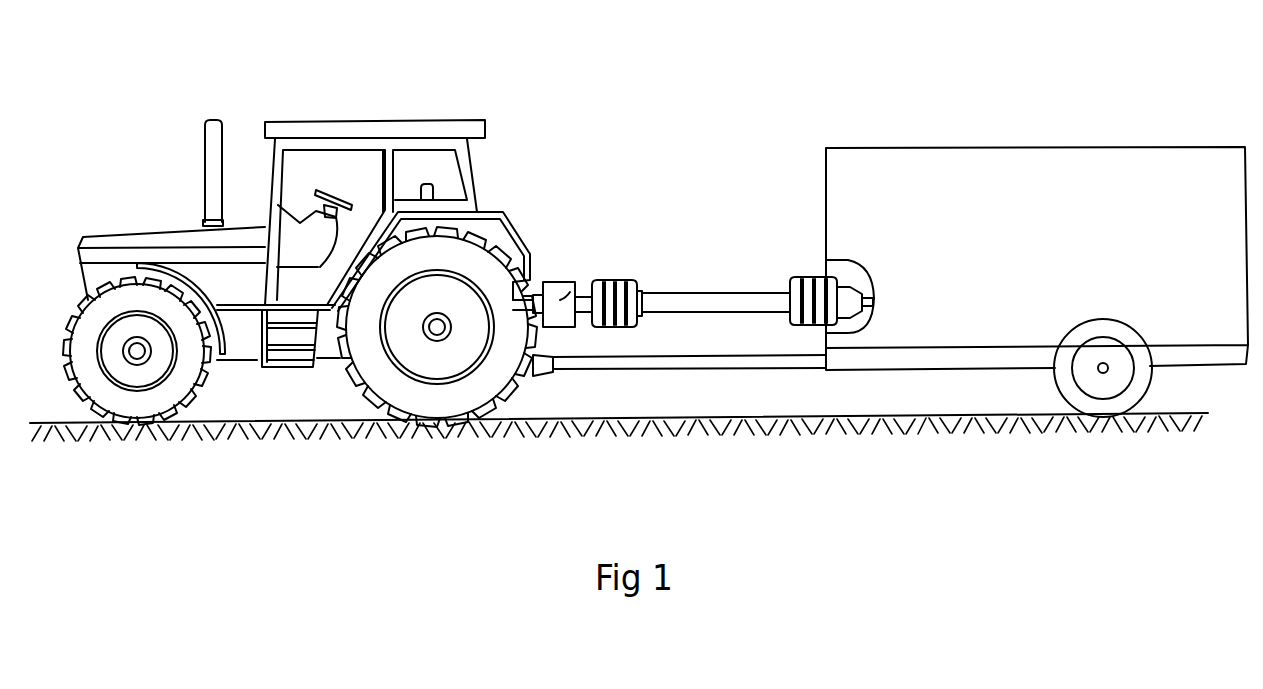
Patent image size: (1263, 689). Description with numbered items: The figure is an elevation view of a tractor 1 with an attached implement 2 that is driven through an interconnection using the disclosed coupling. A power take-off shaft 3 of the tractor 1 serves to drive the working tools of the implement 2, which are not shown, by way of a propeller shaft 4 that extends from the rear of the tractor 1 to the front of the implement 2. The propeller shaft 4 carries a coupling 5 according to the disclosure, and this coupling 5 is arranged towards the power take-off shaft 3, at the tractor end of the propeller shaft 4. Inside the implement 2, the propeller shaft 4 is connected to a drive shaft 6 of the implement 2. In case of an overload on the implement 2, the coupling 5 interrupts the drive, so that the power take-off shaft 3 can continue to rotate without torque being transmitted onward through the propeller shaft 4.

The tractor 1 is at (180, 260).
The implement 2 is at (1015, 207).
The power take-off shaft 3 is at (512, 306).
The propeller shaft 4 is at (697, 298).
The coupling 5 is at (578, 286).
The drive shaft 6 is at (862, 302).